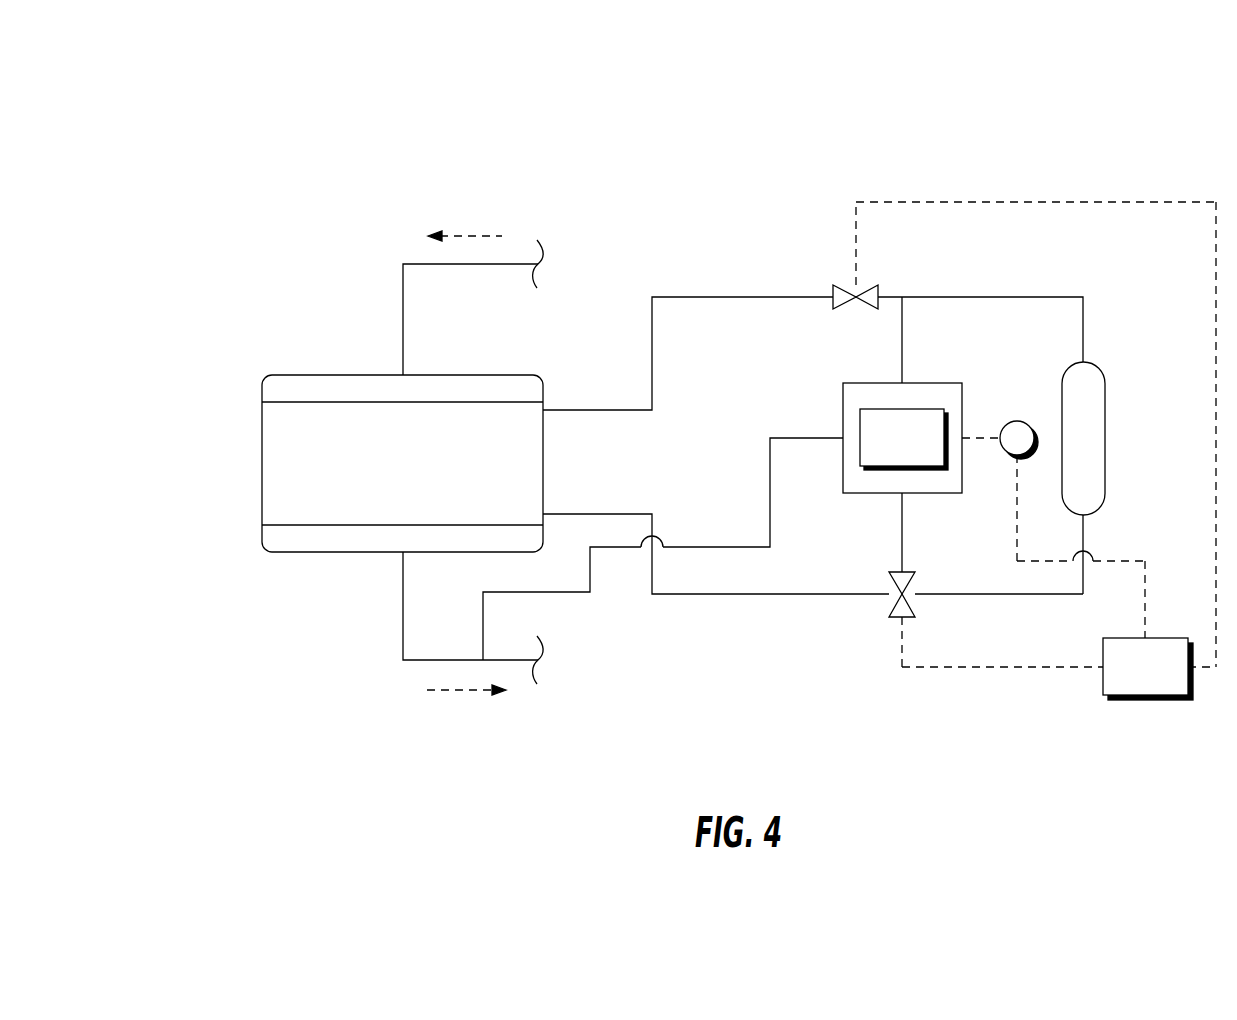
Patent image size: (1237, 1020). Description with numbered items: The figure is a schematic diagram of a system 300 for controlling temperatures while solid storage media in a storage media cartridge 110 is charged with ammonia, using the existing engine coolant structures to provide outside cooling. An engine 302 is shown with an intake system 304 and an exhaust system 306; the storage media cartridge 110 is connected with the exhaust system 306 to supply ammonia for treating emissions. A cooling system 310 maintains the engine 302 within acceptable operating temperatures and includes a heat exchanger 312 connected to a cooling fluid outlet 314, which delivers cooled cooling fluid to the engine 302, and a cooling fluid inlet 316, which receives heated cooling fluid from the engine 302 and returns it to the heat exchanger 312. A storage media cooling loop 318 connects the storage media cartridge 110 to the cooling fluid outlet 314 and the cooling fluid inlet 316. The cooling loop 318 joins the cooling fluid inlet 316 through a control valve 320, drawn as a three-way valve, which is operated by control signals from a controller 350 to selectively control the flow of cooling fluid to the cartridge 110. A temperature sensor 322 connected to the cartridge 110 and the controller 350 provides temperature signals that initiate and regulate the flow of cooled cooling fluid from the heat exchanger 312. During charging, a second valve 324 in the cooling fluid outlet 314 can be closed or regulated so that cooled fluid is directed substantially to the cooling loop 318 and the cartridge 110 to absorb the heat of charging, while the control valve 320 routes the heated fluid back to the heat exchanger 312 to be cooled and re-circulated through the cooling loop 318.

The system 300 is at (260, 100).
The engine 302 is at (424, 477).
The intake system 304 is at (287, 373).
The exhaust system 306 is at (287, 553).
The cooling system 310 is at (848, 609).
The heat exchanger 312 is at (1105, 437).
The cooling fluid outlet 314 is at (977, 297).
The cooling fluid inlet 316 is at (722, 597).
The storage media cooling loop 318 is at (902, 340).
The control valve 320 is at (912, 608).
The temperature sensor 322 is at (1017, 420).
The second valve 324 is at (846, 305).
The controller 350 is at (1166, 681).
The storage media cartridge 110 is at (923, 452).